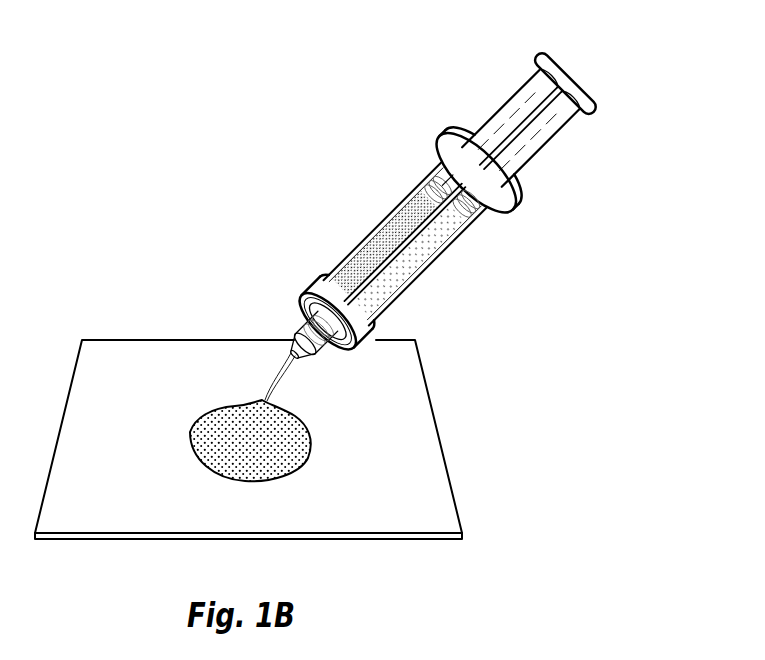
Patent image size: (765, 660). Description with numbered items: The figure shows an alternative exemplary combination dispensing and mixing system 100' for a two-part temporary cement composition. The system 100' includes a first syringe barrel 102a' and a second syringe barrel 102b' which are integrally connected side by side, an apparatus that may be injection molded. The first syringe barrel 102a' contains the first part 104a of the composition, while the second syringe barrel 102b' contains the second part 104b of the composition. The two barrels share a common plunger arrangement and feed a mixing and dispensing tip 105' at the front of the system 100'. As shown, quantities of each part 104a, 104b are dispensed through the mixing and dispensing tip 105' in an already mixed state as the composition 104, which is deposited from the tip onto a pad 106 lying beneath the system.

The combination dispensing and mixing system 100' is at (444, 205).
The first syringe barrel 102a' is at (464, 254).
The second syringe barrel 102b' is at (378, 225).
The first part 104a is at (405, 268).
The second part 104b is at (386, 248).
The composition 104 is at (217, 427).
The mixing and dispensing tip 105' is at (267, 339).
The pad 106 is at (118, 515).